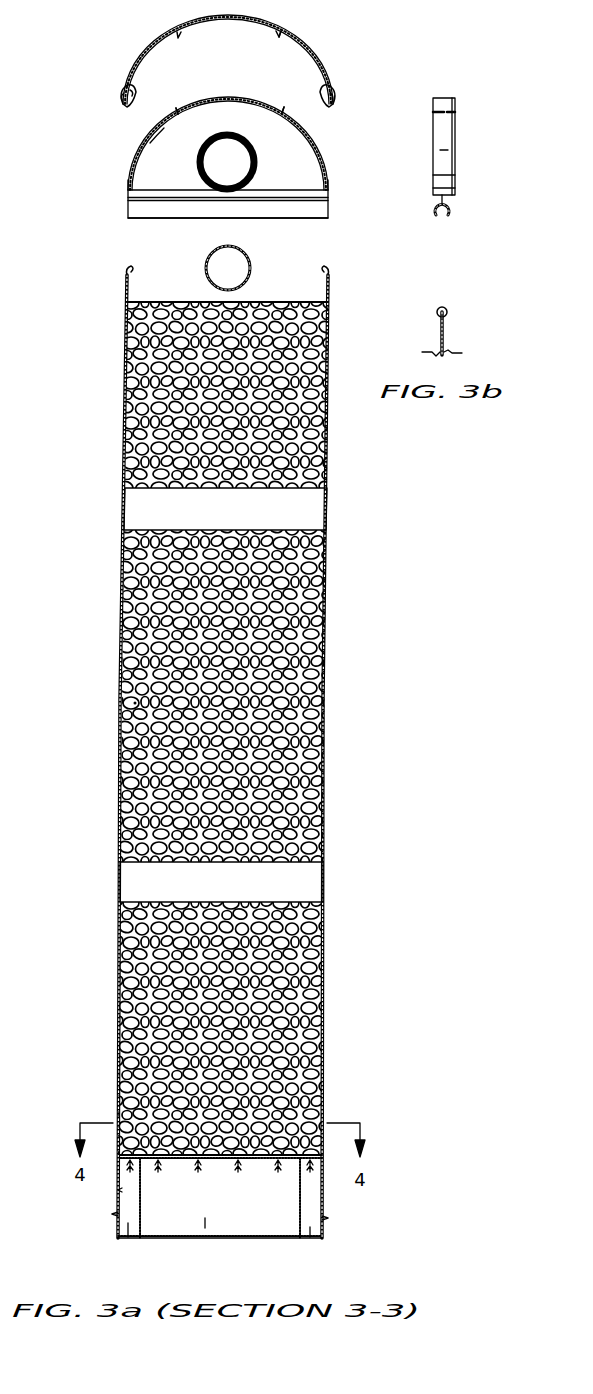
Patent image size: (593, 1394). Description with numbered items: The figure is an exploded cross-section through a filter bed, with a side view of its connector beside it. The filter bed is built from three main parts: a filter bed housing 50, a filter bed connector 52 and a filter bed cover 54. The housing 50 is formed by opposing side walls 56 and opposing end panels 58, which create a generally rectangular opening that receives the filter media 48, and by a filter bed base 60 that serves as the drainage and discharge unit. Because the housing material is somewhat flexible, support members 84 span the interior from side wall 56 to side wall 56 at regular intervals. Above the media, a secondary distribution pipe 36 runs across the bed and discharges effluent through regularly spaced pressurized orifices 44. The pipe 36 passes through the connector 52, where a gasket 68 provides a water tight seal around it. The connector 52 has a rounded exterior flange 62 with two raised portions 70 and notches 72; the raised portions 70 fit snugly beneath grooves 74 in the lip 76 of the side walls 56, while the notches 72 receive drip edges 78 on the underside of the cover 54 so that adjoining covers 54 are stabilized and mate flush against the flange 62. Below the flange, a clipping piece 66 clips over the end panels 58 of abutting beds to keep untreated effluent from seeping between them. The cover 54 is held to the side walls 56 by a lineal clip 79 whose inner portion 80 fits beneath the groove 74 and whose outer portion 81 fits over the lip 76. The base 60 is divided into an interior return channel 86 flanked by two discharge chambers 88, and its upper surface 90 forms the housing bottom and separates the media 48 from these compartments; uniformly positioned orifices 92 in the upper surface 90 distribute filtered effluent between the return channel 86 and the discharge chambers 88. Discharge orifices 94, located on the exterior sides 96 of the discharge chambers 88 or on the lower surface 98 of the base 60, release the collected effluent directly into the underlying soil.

In FIG. 3a, the secondary distribution pipe 36 is at (251, 265).
In FIG. 3a, the pressurized orifice 44 is at (228, 245).
In FIG. 3a, the filter media 48 is at (308, 785).
In FIG. 3a, the filter bed housing 50 is at (234, 750).
In FIG. 3a, the filter bed connector 52 is at (301, 158).
In FIG. 3b, the filter bed connector 52 is at (455, 143).
In FIG. 3a, the filter bed cover 54 is at (318, 46).
In FIG. 3a, the side wall 56 is at (322, 640).
In FIG. 3b, the end panel 58 is at (440, 326).
In FIG. 3a, the filter bed base 60 is at (221, 1218).
In FIG. 3a, the exterior flange 62 is at (150, 143).
In FIG. 3b, the exterior flange 62 is at (440, 150).
In FIG. 3a, the clipping piece 66 is at (321, 210).
In FIG. 3b, the clipping piece 66 is at (450, 210).
In FIG. 3a, the gasket 68 is at (254, 152).
In FIG. 3a, the raised portion 70 is at (131, 178).
In FIG. 3b, the raised portion 70 is at (455, 180).
In FIG. 3a, the notch 72 is at (179, 114).
In FIG. 3b, the notch 72 is at (455, 111).
In FIG. 3a, the groove 74 is at (326, 286).
In FIG. 3a, the lip 76 is at (124, 283).
In FIG. 3a, the drip edge 78 is at (278, 37).
In FIG. 3a, the lineal clip 79 is at (341, 96).
In FIG. 3a, the inner portion 80 is at (133, 98).
In FIG. 3a, the outer portion 81 is at (122, 100).
In FIG. 3a, the support member 84 is at (310, 515).
In FIG. 3a, the interior return channel 86 is at (205, 1238).
In FIG. 3a, the discharge chamber 88 is at (126, 1236).
In FIG. 3a, the upper surface 90 is at (270, 1160).
In FIG. 3a, the orifice 92 is at (132, 1164).
In FIG. 3a, the discharge orifice 94 is at (112, 1214).
In FIG. 3a, the exterior side 96 is at (118, 1190).
In FIG. 3a, the lower surface 98 is at (248, 1243).